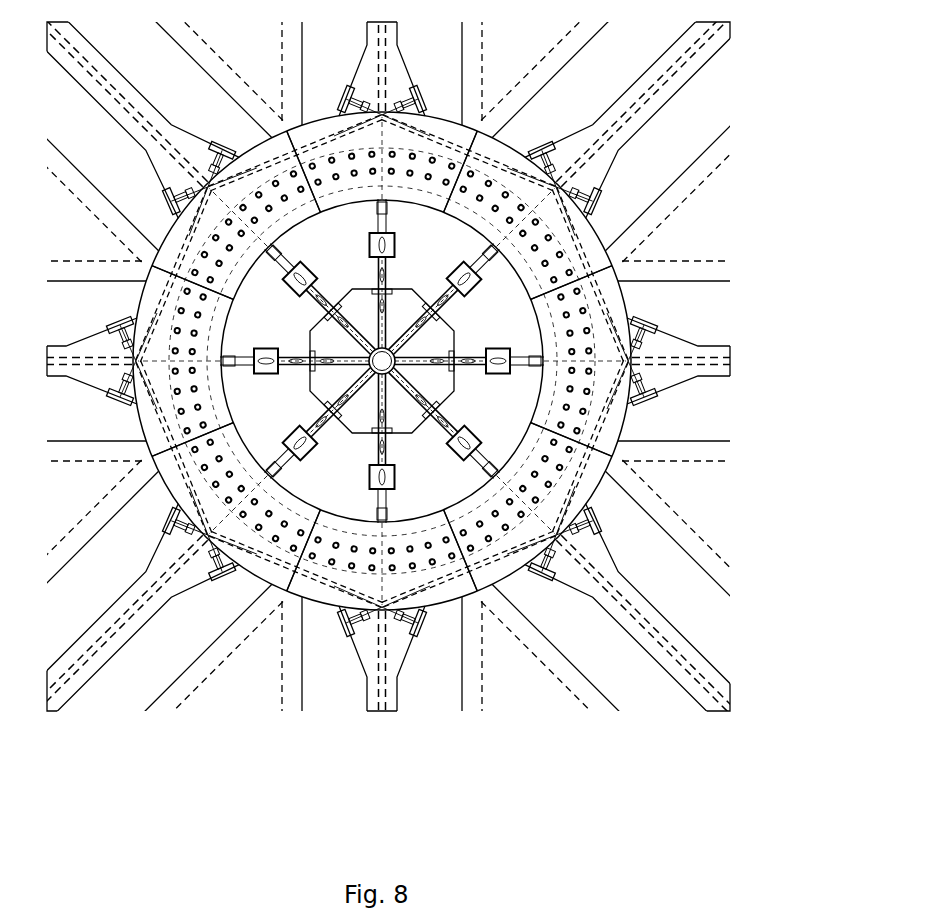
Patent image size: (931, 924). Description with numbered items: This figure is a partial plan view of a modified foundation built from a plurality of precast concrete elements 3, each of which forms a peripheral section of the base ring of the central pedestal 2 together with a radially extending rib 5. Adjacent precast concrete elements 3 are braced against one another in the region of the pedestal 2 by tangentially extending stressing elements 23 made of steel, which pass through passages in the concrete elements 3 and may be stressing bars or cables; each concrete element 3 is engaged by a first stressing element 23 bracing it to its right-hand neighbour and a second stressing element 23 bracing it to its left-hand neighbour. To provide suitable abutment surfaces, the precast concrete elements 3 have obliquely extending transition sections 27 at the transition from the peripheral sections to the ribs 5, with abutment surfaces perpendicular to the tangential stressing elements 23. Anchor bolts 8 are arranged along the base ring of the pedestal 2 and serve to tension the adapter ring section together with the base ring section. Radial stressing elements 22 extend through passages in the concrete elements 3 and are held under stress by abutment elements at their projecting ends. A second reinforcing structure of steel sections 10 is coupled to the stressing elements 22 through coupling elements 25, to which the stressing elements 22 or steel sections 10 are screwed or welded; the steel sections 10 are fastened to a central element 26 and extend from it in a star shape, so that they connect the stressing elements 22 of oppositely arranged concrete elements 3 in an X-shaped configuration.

The pedestal 2 is at (628, 425).
The precast concrete element 3 is at (441, 430).
The rib 5 is at (637, 189).
The anchor bolt 8 is at (567, 255).
The steel section 10 is at (382, 361).
The stressing element 22 is at (645, 109).
The tangential stressing element 23 is at (409, 102).
The coupling element 25 is at (397, 247).
The central element 26 is at (397, 353).
The transition section 27 is at (181, 197).